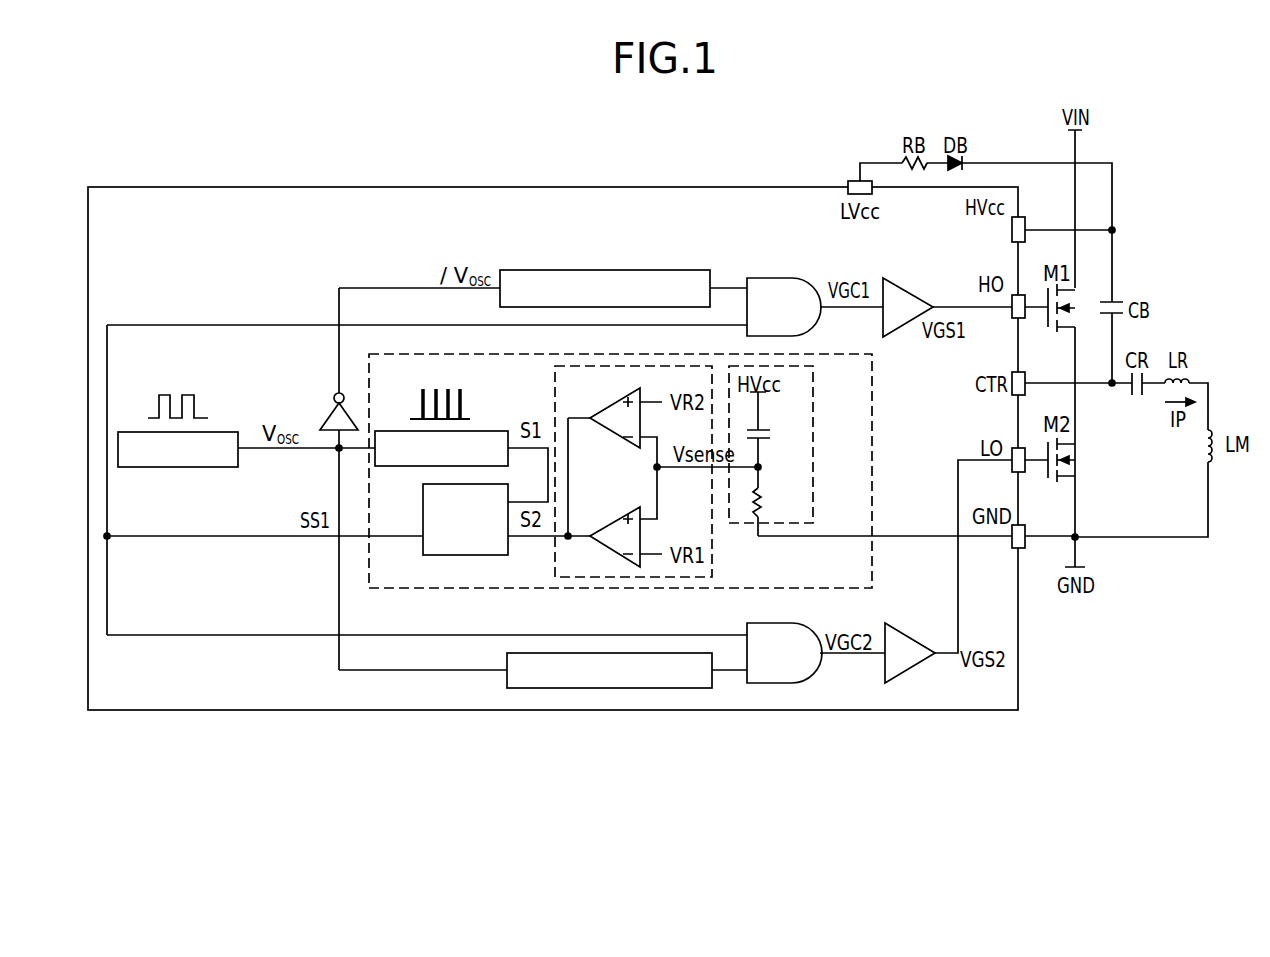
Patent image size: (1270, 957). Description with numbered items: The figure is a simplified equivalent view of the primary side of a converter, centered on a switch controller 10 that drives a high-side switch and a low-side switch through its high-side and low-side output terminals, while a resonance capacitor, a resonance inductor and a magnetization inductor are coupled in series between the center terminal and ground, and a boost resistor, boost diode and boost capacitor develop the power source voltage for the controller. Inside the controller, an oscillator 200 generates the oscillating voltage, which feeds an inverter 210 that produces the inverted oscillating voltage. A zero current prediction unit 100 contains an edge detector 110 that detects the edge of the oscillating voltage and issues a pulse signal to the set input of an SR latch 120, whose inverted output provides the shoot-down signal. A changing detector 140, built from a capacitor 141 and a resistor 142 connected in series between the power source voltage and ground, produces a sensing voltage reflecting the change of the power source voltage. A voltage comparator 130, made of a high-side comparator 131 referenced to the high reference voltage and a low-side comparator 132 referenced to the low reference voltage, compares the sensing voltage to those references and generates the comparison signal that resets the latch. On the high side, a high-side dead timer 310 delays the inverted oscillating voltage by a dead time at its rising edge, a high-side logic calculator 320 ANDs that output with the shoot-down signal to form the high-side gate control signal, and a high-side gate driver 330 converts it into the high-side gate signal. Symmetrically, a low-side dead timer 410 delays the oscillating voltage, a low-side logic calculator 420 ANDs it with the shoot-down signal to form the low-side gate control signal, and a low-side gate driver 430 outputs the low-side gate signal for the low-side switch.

The switch controller 10 is at (955, 712).
The zero current prediction unit 100 is at (872, 566).
The edge detector 110 is at (485, 430).
The SR latch 120 is at (442, 555).
The voltage comparator 130 is at (712, 559).
The high-side comparator 131 is at (620, 518).
The low-side comparator 132 is at (620, 398).
The changing detector 140 is at (798, 451).
The capacitor 141 is at (764, 434).
The resistor 142 is at (776, 502).
The oscillator 200 is at (181, 468).
The inverter 210 is at (327, 413).
The high-side dead timer 310 is at (625, 269).
The high-side logic calculator 320 is at (760, 276).
The high-side gate driver 330 is at (898, 286).
The low-side dead timer 410 is at (508, 688).
The low-side logic calculator 420 is at (780, 623).
The low-side gate driver 430 is at (906, 633).